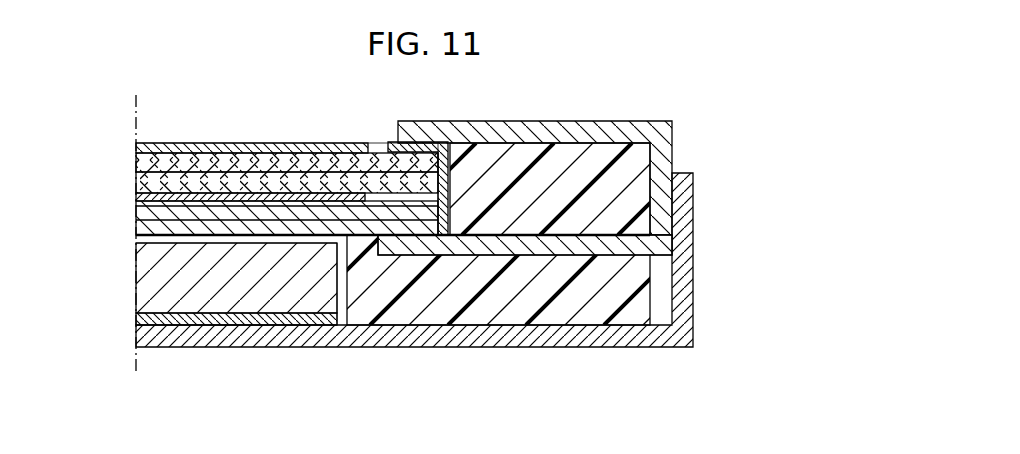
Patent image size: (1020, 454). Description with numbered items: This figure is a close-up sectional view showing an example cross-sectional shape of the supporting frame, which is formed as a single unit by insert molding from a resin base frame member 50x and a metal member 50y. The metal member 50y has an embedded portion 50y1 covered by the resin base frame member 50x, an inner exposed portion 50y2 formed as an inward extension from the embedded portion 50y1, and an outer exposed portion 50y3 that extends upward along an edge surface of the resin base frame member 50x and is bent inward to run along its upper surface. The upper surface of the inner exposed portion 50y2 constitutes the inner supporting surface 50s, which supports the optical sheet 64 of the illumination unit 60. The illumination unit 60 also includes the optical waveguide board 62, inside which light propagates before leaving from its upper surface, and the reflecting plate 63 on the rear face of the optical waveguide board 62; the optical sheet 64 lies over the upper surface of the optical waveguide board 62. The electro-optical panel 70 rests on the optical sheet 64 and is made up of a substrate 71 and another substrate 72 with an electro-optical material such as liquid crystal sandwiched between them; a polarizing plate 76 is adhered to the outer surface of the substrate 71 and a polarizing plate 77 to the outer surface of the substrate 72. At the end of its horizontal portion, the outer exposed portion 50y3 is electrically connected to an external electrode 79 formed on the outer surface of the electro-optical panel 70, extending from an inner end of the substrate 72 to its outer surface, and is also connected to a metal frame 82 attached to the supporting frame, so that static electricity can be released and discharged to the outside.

The inner supporting surface 50s is at (408, 228).
The resin base frame member 50x is at (587, 168).
The metal member 50y is at (488, 255).
The embedded portion 50y1 is at (582, 252).
The inner exposed portion 50y2 is at (402, 252).
The outer exposed portion 50y3 is at (665, 208).
The illumination unit 60 is at (121, 301).
The optical waveguide board 62 is at (188, 302).
The reflecting plate 63 is at (243, 325).
The optical sheet 64 is at (137, 218).
The electro-optical panel 70 is at (236, 138).
The substrate 71 is at (137, 187).
The substrate 72 is at (137, 163).
The polarizing plate 76 is at (137, 195).
The polarizing plate 77 is at (137, 143).
The external electrode 79 is at (474, 143).
The metal frame 82 is at (685, 297).